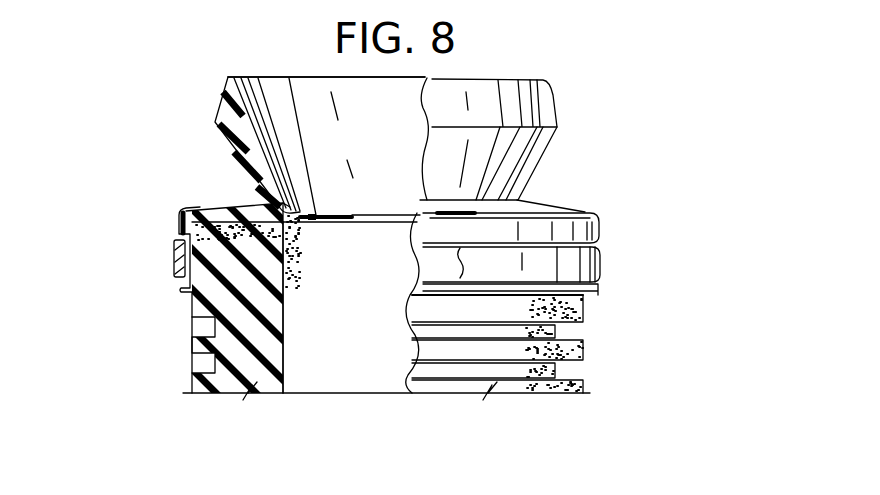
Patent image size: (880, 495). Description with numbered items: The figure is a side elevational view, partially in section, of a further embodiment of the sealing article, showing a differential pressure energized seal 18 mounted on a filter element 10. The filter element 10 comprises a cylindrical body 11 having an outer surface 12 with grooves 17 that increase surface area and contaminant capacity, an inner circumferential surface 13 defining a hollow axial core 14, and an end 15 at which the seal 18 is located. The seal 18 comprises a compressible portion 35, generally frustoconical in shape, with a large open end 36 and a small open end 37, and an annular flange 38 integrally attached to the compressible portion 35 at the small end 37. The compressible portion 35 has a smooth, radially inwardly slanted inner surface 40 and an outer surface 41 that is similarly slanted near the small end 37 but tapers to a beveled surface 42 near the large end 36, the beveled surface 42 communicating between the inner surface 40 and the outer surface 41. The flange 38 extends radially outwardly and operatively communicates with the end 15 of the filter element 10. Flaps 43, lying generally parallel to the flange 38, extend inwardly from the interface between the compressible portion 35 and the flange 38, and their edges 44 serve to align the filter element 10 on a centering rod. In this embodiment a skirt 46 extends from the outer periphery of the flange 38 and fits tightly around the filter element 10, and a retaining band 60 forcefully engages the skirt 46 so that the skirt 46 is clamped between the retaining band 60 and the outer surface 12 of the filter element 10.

The filter element 10 is at (605, 327).
The cylindrical structure or body 11 is at (587, 385).
The outer surface 12 is at (583, 352).
The inner circumferential surface 13 is at (282, 367).
The hollow axial core 14 is at (373, 380).
The end 15 is at (190, 303).
The grooves 17 is at (213, 360).
The differential pressure energized seal 18 is at (573, 120).
The compressible portion 35 is at (233, 93).
The large open end 36 is at (266, 80).
The small open end 37 is at (338, 223).
The annular flange 38 is at (583, 210).
The inner surface 40 is at (270, 140).
The outer surface 41 is at (223, 138).
The beveled surface 42 is at (550, 90).
The flaps 43 is at (298, 212).
The edges 44 is at (313, 217).
The skirt 46 is at (180, 232).
The retaining band 60 is at (173, 258).